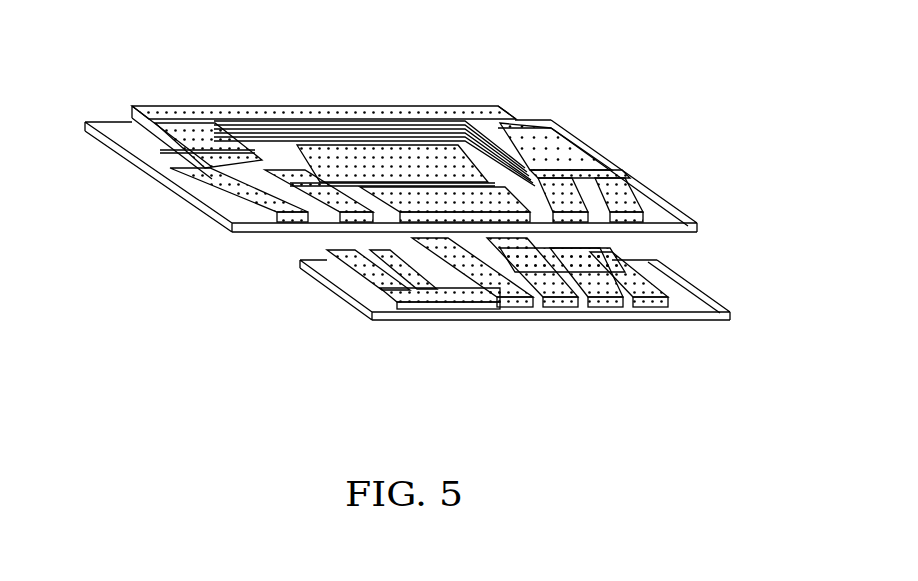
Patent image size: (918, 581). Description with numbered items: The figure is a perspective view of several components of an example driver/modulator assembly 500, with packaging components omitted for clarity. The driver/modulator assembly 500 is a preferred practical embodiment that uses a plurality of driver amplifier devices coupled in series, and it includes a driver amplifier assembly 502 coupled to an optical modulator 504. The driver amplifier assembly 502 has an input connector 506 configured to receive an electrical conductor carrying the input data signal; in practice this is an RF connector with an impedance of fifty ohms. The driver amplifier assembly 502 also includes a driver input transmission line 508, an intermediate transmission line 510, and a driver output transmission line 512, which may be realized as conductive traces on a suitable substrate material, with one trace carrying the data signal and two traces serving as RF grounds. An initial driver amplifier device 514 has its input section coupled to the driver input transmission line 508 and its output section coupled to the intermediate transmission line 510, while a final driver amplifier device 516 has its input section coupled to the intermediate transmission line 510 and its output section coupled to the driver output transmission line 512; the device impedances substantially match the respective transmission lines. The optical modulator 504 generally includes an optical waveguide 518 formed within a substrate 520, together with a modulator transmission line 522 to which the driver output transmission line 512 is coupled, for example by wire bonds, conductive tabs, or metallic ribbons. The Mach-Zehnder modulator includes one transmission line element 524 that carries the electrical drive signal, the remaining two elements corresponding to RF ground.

The driver/modulator assembly 500 is at (428, 44).
The driver amplifier assembly 502 is at (333, 292).
The optical modulator 504 is at (217, 222).
The input connector 506 is at (732, 318).
The driver input transmission line 508 is at (650, 322).
The intermediate transmission line 510 is at (553, 324).
The driver output transmission line 512 is at (419, 320).
The initial driver amplifier device 514 is at (601, 323).
The final driver amplifier device 516 is at (507, 322).
The optical waveguide 518 is at (160, 150).
The substrate 520 is at (200, 178).
The modulator transmission line 522 is at (463, 85).
The transmission line element 524 is at (290, 135).